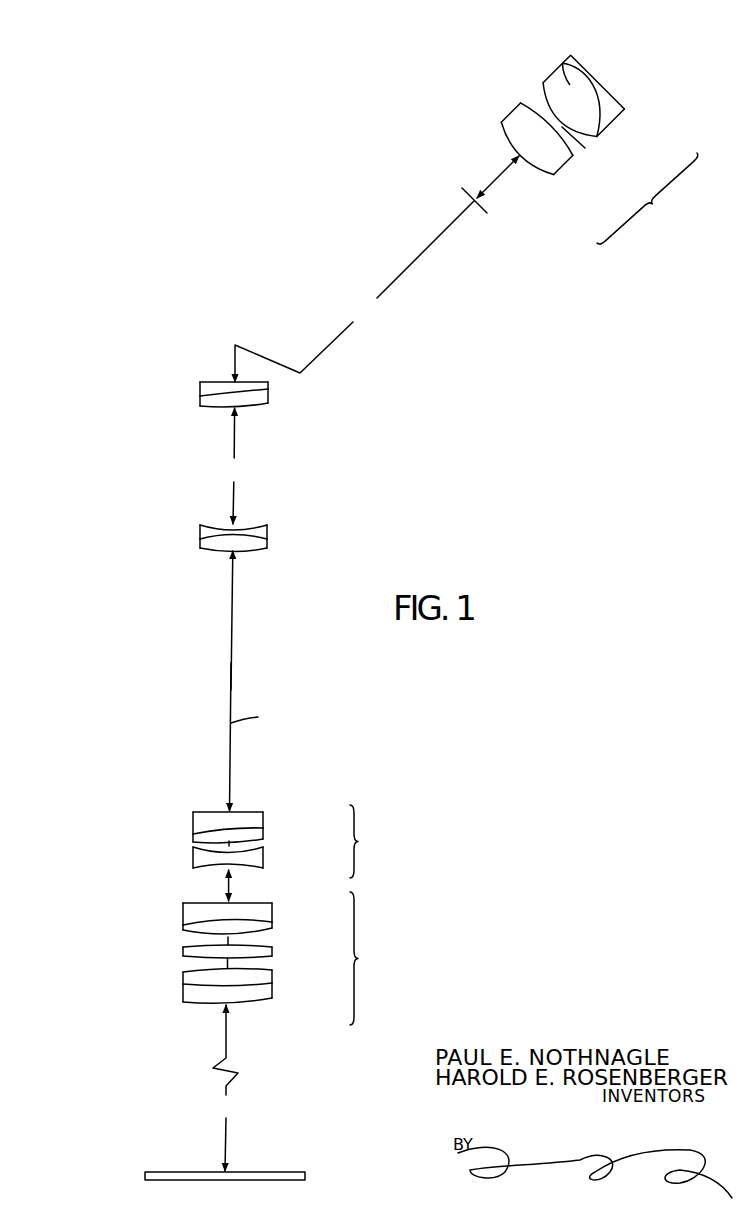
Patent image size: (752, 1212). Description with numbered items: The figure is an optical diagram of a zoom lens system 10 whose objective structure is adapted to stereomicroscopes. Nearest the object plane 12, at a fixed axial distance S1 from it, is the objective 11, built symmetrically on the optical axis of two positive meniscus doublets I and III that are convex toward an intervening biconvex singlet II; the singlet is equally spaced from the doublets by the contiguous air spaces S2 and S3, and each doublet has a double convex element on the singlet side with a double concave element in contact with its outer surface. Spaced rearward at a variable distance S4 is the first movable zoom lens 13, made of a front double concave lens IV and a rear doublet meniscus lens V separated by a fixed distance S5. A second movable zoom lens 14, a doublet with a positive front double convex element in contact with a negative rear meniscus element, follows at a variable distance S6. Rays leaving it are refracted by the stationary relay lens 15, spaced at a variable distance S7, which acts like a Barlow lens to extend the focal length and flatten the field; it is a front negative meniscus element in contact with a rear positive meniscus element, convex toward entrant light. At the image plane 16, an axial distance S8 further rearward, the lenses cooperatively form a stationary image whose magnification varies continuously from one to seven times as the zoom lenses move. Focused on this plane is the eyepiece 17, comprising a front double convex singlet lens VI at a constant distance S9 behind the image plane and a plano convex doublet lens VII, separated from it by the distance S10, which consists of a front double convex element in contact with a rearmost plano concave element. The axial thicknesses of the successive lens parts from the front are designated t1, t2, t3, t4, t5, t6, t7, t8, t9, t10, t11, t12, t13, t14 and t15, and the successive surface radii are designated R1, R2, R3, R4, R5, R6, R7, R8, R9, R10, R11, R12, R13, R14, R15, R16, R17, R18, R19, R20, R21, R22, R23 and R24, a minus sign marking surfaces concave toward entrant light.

The optical lens system 10 is at (95, 652).
The objective 11 is at (252, 964).
The object plane 12 is at (252, 1172).
The first movable zoom lens 13 is at (256, 818).
The second movable zoom lens 14 is at (236, 547).
The stationary relay lens 15 is at (241, 395).
The image plane 16 is at (465, 198).
The eyepiece 17 is at (570, 129).
The positive meniscus doublet I is at (220, 1022).
The biconvex singlet II is at (226, 959).
The positive meniscus doublet III is at (229, 893).
The double concave lens IV is at (232, 848).
The doublet meniscus lens V is at (233, 790).
The double convex singlet lens VI is at (525, 155).
The plano convex doublet lens VII is at (574, 92).
The lens surface radius R1 is at (205, 1037).
The lens surface radius R2 is at (187, 1000).
The lens surface radius R3 is at (188, 973).
The lens surface radius R4 is at (196, 969).
The lens surface radius R5 is at (187, 941).
The lens surface radius R6 is at (188, 933).
The lens surface radius R7 is at (188, 922).
The lens surface radius R8 is at (188, 907).
The lens surface radius R9 is at (190, 848).
The lens surface radius R10 is at (200, 850).
The lens surface radius R11 is at (201, 840).
The lens surface radius R12 is at (202, 830).
The lens surface radius R13 is at (213, 810).
The lens surface radius R14 is at (220, 552).
The lens surface radius R15 is at (207, 548).
The lens surface radius R16 is at (207, 520).
The lens surface radius R17 is at (209, 410).
The lens surface radius R18 is at (209, 399).
The lens surface radius R19 is at (208, 381).
The lens surface radius R20 is at (509, 136).
The lens surface radius R21 is at (509, 122).
The lens surface radius R22 is at (543, 90).
The lens surface radius R23 is at (568, 65).
The lens surface radius R24 is at (572, 54).
The axial lens thickness t1 is at (237, 993).
The axial lens thickness t2 is at (227, 985).
The axial lens thickness t3 is at (232, 950).
The axial lens thickness t4 is at (238, 926).
The axial lens thickness t5 is at (228, 912).
The axial lens thickness t6 is at (233, 862).
The axial lens thickness t7 is at (237, 835).
The axial lens thickness t8 is at (232, 818).
The axial lens thickness t9 is at (237, 544).
The axial lens thickness t10 is at (238, 527).
The axial lens thickness t11 is at (231, 410).
The axial lens thickness t12 is at (235, 388).
The axial lens thickness t13 is at (537, 139).
The axial lens thickness t14 is at (583, 95).
The axial lens thickness t15 is at (595, 82).
The fixed axial distance S1 is at (226, 1088).
The axial air space S2 is at (233, 966).
The axial air space S3 is at (233, 940).
The variable axial distance S4 is at (234, 888).
The fixed distance S5 is at (232, 845).
The variable axial distance S6 is at (236, 681).
The variable distance S7 is at (241, 466).
The axial distance S8 is at (354, 291).
The constant axial distance S9 is at (498, 177).
The axial distance S10 is at (586, 151).